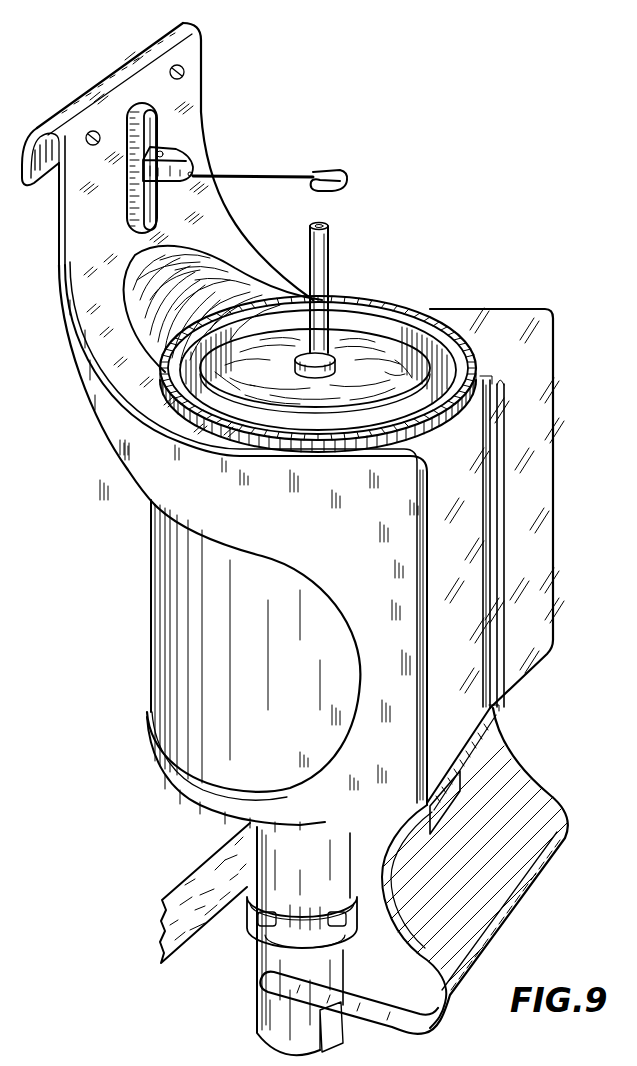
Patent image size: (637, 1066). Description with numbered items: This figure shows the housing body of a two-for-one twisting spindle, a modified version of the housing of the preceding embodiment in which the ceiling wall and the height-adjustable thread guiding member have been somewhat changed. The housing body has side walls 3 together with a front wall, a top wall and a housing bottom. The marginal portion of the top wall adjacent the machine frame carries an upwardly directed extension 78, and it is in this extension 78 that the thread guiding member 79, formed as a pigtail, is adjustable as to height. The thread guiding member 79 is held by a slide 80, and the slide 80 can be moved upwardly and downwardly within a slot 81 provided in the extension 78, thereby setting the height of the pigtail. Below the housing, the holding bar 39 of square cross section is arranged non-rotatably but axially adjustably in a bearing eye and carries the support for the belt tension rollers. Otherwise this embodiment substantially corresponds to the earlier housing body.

The side walls 3 is at (270, 542).
The holding bar 39 is at (207, 878).
The upwardly directed extension 78 is at (187, 138).
The thread guiding member 79 is at (262, 177).
The slide 80 is at (186, 157).
The slot 81 is at (157, 127).